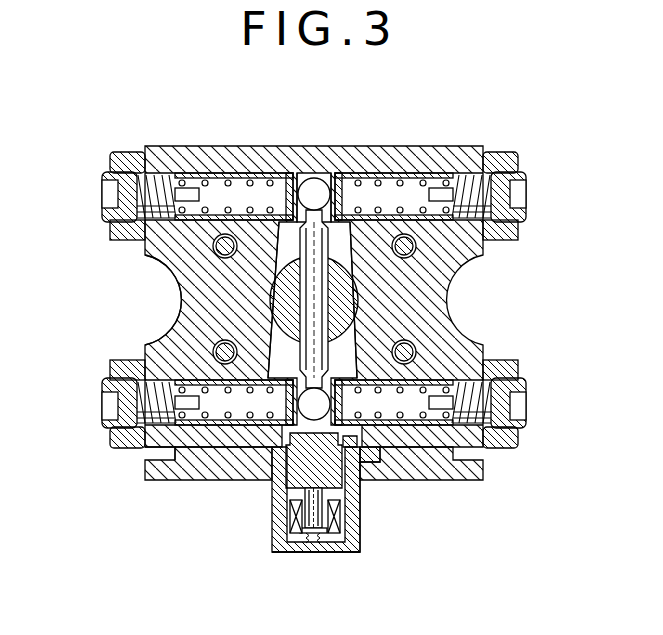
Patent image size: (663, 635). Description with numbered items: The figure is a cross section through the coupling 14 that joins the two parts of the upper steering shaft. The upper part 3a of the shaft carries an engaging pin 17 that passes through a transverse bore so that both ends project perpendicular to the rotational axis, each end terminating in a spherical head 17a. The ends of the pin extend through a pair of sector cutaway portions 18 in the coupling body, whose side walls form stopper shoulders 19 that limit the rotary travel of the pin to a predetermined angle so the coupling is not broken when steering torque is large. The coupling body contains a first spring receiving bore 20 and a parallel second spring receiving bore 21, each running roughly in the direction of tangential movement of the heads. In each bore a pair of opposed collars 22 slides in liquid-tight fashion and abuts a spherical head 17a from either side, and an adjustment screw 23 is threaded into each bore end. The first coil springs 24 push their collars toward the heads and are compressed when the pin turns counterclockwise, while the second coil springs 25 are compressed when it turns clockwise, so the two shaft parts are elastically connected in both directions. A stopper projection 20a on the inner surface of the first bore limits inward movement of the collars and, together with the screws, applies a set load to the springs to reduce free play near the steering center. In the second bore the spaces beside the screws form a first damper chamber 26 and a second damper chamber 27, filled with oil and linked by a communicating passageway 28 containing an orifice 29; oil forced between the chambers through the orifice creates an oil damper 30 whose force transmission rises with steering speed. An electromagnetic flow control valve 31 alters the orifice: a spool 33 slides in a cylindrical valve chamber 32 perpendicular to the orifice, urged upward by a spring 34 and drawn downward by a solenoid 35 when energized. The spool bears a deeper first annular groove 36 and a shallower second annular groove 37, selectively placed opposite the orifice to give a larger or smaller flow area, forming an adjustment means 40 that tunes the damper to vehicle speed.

The coupling 14 is at (155, 130).
The first spring receiving bore 20 is at (420, 172).
The stopper projection 20a is at (322, 172).
The stopper shoulders 19 is at (282, 248).
The oil damper 30 is at (150, 343).
The sector cutaway portions 18 is at (345, 240).
The upper part of upper steering shaft 3a is at (358, 298).
The engaging pin 17 is at (330, 313).
The spherical heads 17a is at (302, 178).
The collars 22 is at (262, 172).
The first damper chamber 26 is at (448, 470).
The first coil springs 24 is at (203, 170).
The second coil springs 25 is at (437, 172).
The adjustment screw 23 is at (102, 170).
The second spring receiving bore 21 is at (270, 466).
The second damper chamber 27 is at (196, 447).
The first annular groove 36 is at (366, 455).
The electromagnetic flow control valve 31 is at (361, 550).
The solenoid 35 is at (353, 527).
The communicating passageway 28 is at (290, 478).
The orifice 29 is at (357, 484).
The spool 33 is at (308, 510).
The cylindrical valve chamber 32 is at (292, 512).
The second annular groove 37 is at (343, 512).
The spring 34 is at (312, 541).
The adjustment means 40 is at (344, 560).